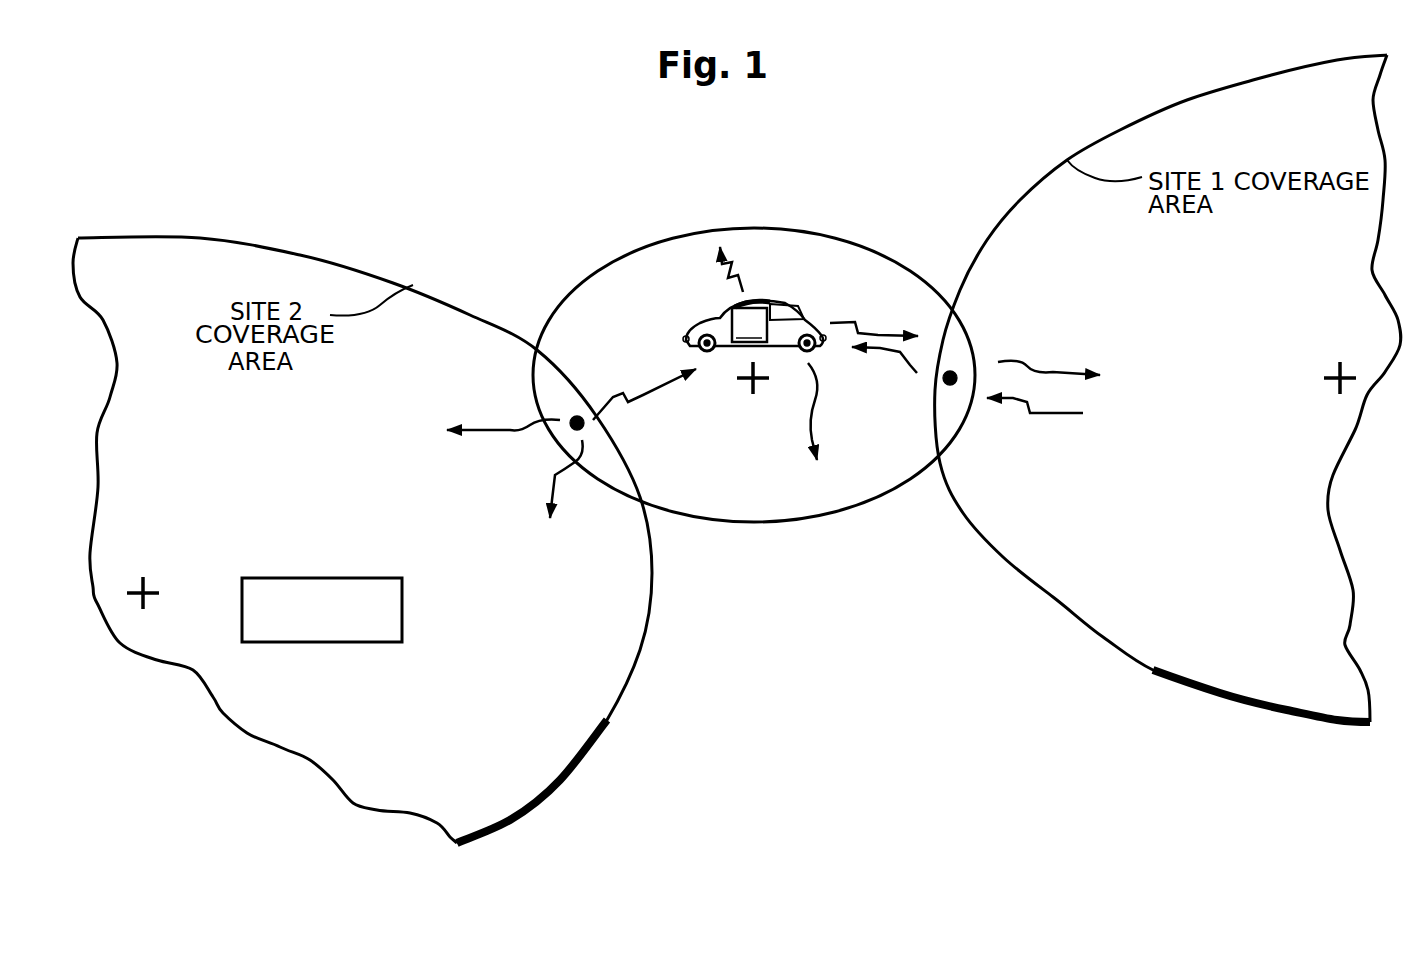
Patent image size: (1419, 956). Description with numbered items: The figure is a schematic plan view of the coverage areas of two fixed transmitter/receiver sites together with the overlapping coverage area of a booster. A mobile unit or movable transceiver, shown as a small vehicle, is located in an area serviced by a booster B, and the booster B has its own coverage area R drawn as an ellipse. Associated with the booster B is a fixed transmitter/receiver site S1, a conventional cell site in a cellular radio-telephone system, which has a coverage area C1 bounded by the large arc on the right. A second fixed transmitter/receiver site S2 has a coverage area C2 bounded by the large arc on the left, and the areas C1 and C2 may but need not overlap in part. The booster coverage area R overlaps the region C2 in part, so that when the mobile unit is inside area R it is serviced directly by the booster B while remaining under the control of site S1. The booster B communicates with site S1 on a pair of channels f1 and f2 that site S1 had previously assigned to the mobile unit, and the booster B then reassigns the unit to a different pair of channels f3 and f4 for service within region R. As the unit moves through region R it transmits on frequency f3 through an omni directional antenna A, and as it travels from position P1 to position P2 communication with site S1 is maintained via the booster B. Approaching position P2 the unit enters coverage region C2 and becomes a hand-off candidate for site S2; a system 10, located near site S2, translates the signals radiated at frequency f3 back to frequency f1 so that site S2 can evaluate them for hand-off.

The coverage area of booster R is at (638, 247).
The omni directional antenna A is at (805, 278).
The position P1 is at (772, 394).
The position P2 is at (577, 413).
The booster B is at (950, 370).
The fixed transmitter/receiver site S1 is at (1323, 371).
The second fixed transmitter/receiver site S2 is at (198, 525).
The coverage area C1 is at (1153, 670).
The coverage area C2 is at (607, 720).
The system 10 is at (323, 578).
The channel f1 is at (1050, 368).
The channel f2 is at (1047, 415).
The channel f3 is at (735, 270).
The channel f4 is at (915, 372).